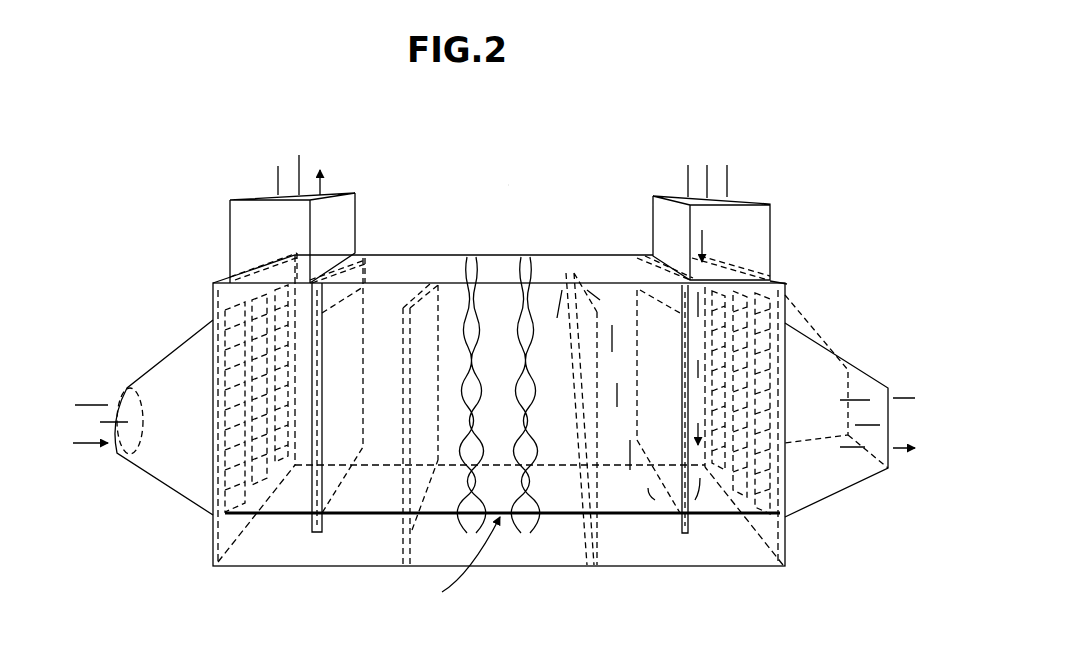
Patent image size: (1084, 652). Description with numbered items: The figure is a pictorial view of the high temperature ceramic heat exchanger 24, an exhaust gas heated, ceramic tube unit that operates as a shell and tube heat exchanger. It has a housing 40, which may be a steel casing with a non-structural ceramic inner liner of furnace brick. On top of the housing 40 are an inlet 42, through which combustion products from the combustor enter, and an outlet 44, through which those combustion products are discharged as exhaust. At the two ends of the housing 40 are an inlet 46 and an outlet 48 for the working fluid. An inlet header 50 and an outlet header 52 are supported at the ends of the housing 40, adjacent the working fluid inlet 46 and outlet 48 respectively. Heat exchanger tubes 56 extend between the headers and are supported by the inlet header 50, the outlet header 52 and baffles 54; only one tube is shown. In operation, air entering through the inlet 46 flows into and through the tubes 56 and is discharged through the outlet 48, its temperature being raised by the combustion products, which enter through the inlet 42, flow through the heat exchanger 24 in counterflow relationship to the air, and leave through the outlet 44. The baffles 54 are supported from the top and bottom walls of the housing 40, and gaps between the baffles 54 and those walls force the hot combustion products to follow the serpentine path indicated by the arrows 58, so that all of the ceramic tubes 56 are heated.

The ceramic heat exchanger 24 is at (508, 185).
The housing 40 is at (607, 267).
The inlet 42 is at (768, 232).
The outlet 44 is at (347, 217).
The inlet 46 is at (165, 355).
The outlet 48 is at (845, 490).
The inlet header 50 is at (786, 295).
The outlet header 52 is at (210, 303).
The baffles 54 is at (423, 380).
The heat exchanger tubes 56 is at (620, 518).
The arrows 58 is at (573, 296).